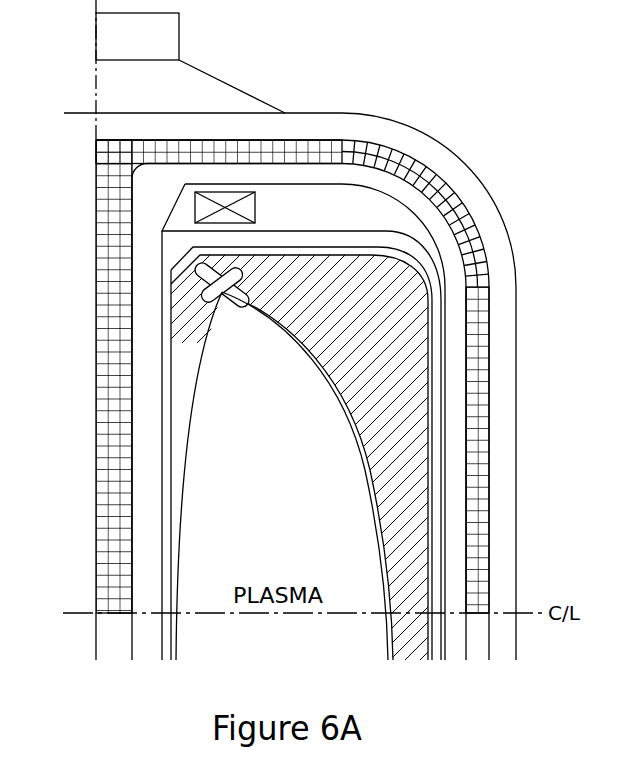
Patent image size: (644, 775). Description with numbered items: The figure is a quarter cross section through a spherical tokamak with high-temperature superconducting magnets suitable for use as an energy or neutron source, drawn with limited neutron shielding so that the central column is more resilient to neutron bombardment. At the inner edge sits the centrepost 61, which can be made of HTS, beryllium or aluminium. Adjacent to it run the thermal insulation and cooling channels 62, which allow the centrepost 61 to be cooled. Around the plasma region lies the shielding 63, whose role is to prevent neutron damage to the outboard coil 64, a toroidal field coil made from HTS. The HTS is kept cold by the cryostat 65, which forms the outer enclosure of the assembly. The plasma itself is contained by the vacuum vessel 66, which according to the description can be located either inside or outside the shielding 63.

The centrepost 61 is at (110, 412).
The thermal insulation and cooling channels 62 is at (145, 468).
The shielding 63 is at (378, 323).
The outboard coil 64 is at (185, 148).
The cryostat 65 is at (395, 122).
The vacuum vessel 66 is at (425, 247).